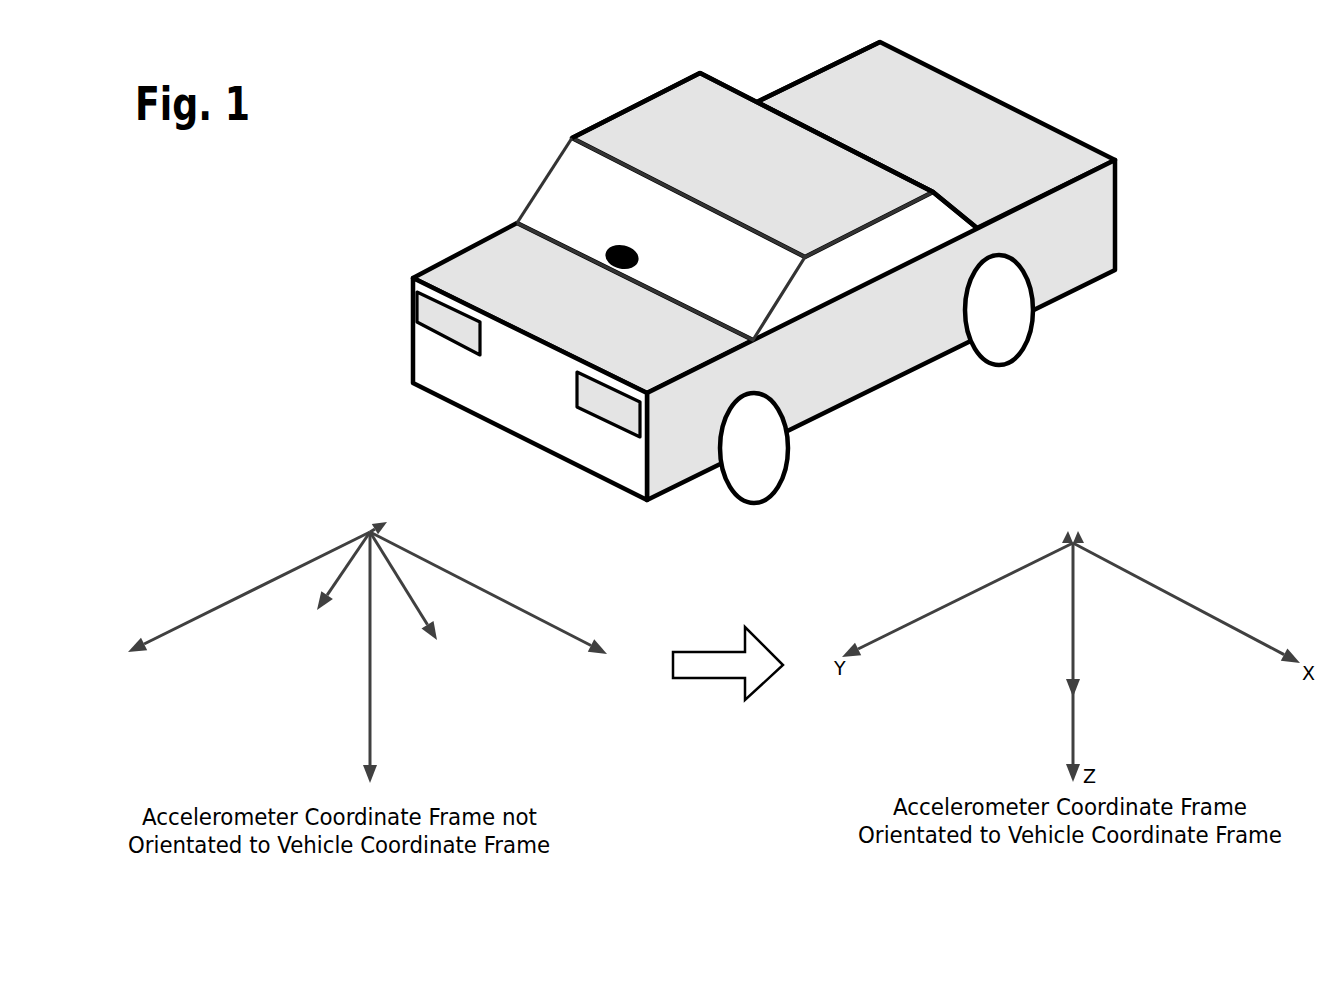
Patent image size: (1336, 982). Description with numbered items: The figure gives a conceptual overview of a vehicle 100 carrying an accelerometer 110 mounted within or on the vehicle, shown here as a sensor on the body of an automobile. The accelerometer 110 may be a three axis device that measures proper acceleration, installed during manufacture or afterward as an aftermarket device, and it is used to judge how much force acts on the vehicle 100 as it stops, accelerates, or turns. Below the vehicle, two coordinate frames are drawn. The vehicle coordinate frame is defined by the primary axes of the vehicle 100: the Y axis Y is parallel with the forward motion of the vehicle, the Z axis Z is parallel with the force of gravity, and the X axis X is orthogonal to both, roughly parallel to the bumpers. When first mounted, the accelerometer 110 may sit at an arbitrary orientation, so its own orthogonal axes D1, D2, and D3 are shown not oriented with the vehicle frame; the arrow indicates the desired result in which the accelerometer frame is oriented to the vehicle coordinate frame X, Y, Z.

The vehicle 100 is at (407, 207).
The accelerometer 110 is at (614, 248).
The X axis X is at (494, 605).
The Y axis Y is at (240, 605).
The Z axis Z is at (378, 659).
The accelerometer axis D1 is at (411, 600).
The accelerometer axis D2 is at (335, 583).
The accelerometer axis D3 is at (392, 520).